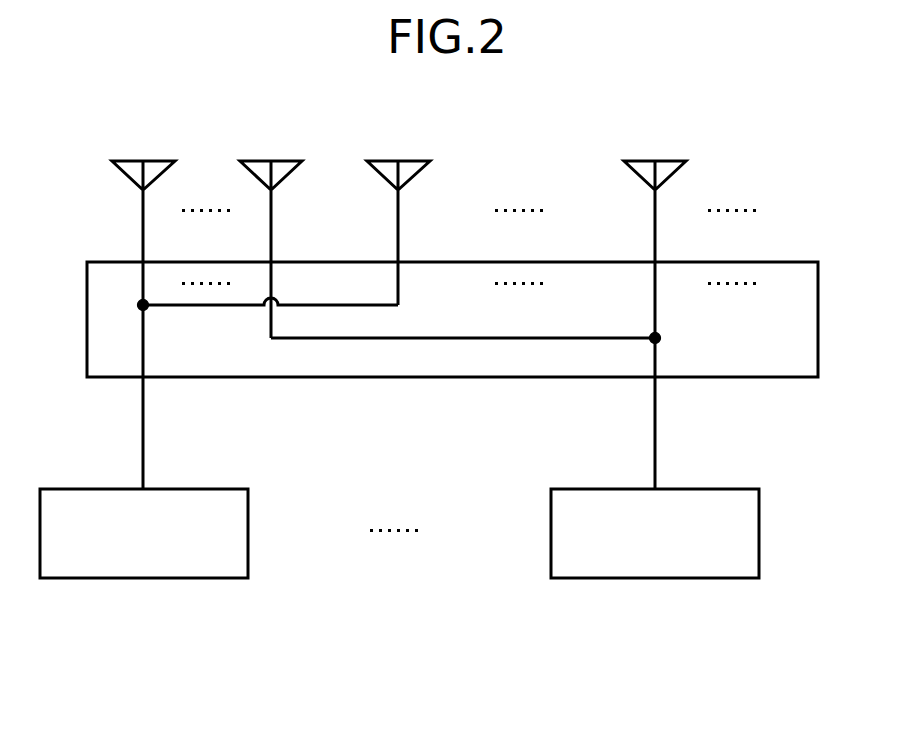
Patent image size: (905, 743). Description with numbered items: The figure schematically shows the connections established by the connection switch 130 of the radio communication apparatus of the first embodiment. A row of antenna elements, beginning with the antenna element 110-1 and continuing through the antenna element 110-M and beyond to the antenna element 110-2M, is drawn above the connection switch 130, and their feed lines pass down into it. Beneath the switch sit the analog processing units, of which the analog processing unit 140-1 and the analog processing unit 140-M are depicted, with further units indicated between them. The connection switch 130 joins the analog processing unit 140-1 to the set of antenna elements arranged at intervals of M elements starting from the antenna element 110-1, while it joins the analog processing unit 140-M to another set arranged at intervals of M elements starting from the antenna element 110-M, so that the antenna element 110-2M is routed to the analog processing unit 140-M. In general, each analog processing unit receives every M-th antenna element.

The antenna element 110-1 is at (160, 161).
The antenna element 110-M is at (289, 161).
The antenna element 110-2M is at (672, 161).
The connection switch 130 is at (785, 262).
The analog processing unit 140-1 is at (183, 489).
The analog processing unit 140-M is at (695, 489).